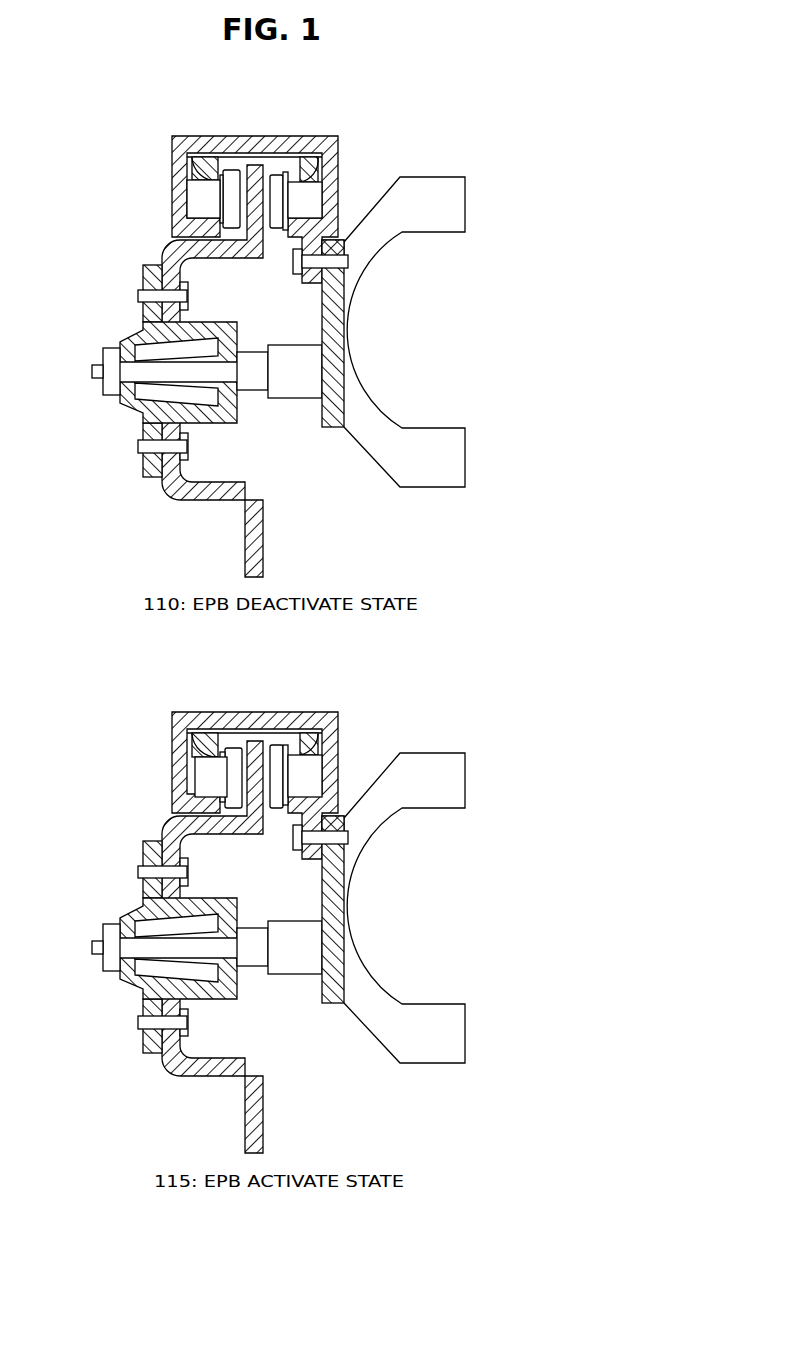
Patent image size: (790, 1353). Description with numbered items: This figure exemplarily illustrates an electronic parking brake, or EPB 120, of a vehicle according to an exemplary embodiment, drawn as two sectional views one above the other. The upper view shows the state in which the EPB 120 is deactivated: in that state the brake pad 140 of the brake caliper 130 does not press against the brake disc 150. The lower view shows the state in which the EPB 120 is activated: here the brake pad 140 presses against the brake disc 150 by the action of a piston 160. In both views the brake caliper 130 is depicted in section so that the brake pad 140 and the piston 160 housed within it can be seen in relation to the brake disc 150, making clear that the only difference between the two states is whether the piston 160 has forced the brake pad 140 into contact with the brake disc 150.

The electronic parking brake (EPB) 120 is at (103, 131).
The brake caliper 130 is at (182, 186).
The brake pad 140 is at (277, 183).
The brake disc 150 is at (265, 532).
The piston 160 is at (207, 195).